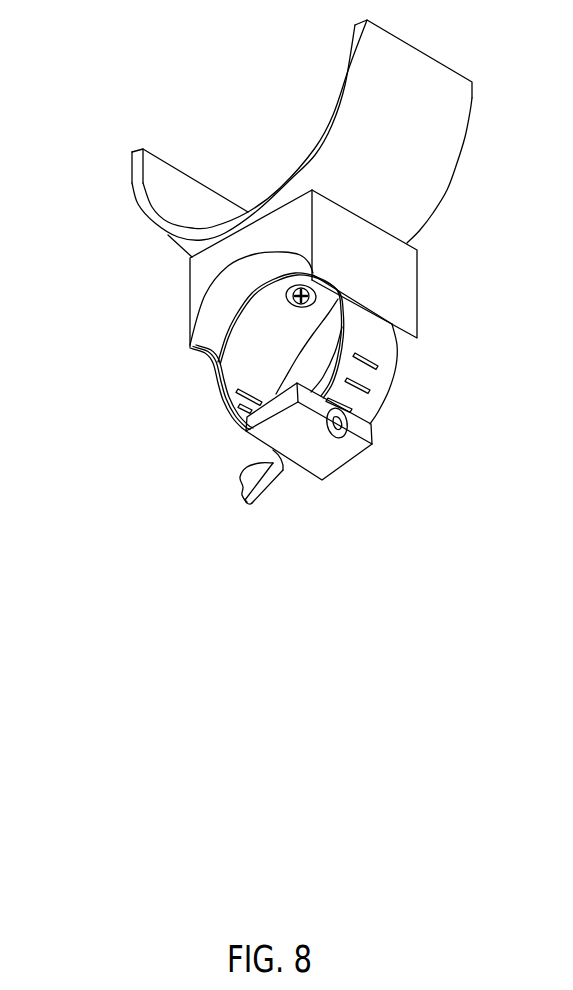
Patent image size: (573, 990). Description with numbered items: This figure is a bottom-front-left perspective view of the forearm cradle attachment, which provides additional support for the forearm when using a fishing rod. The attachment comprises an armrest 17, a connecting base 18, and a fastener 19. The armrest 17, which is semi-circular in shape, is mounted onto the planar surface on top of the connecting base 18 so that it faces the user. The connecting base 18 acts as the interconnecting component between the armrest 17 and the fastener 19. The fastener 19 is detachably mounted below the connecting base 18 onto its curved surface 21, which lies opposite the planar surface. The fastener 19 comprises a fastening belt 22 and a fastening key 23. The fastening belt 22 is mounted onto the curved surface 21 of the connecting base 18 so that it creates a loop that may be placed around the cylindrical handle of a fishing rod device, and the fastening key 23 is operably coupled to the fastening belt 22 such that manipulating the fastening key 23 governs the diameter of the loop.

The armrest 17 is at (142, 186).
The connecting base 18 is at (192, 287).
The fastener 19 is at (393, 428).
The curved surface 21 is at (200, 340).
The fastening belt 22 is at (377, 377).
The fastening key 23 is at (253, 482).